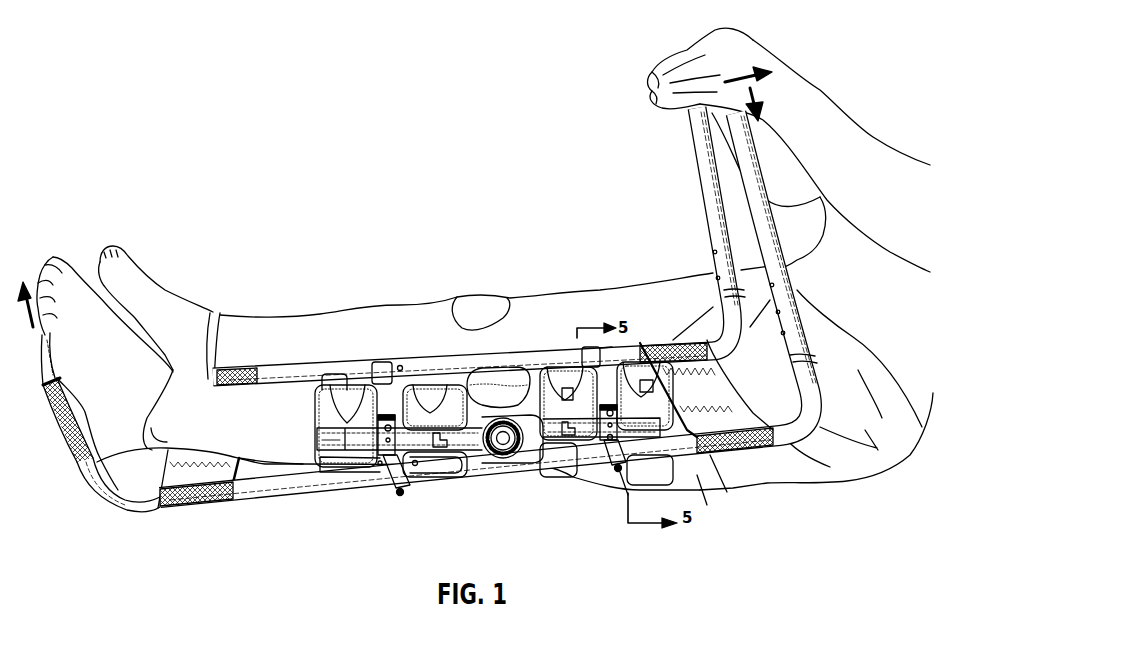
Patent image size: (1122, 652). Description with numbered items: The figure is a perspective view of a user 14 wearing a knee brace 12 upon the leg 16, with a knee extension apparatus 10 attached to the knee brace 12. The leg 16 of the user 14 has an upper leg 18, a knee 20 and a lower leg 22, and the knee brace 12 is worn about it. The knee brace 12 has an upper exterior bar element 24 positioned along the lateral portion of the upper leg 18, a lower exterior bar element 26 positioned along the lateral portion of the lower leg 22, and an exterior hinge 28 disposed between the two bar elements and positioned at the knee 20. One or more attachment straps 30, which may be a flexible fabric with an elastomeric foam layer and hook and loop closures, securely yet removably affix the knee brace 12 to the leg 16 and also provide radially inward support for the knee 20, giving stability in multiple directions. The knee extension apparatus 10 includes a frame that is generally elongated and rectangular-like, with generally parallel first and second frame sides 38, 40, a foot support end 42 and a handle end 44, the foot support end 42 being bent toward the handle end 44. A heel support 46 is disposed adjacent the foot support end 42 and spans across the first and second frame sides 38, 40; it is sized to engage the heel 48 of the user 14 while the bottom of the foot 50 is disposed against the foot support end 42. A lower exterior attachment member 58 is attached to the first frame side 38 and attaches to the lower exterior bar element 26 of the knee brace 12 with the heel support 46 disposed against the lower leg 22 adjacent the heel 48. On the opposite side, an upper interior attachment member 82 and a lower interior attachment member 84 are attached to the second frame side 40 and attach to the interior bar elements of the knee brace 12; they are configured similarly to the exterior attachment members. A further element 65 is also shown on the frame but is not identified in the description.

The knee extension apparatus 10 is at (285, 222).
The knee brace 12 is at (337, 458).
The user 14 is at (882, 72).
The leg 16 is at (273, 447).
The upper leg 18 is at (697, 473).
The knee 20 is at (507, 377).
The lower leg 22 is at (207, 433).
The upper exterior bar element 24 is at (590, 427).
The lower exterior bar element 26 is at (332, 435).
The exterior hinge 28 is at (498, 443).
The attachment straps 30 is at (343, 387).
The first frame side 38 is at (368, 470).
The second frame side 40 is at (595, 343).
The foot support end 42 is at (46, 356).
The handle end 44 is at (702, 163).
The heel support 46 is at (213, 473).
The heel 48 is at (110, 442).
The foot 50 is at (110, 367).
The lower exterior attachment member 58 is at (403, 480).
The clamp 65 is at (615, 447).
The upper interior attachment member 82 is at (610, 348).
The lower interior attachment member 84 is at (385, 367).